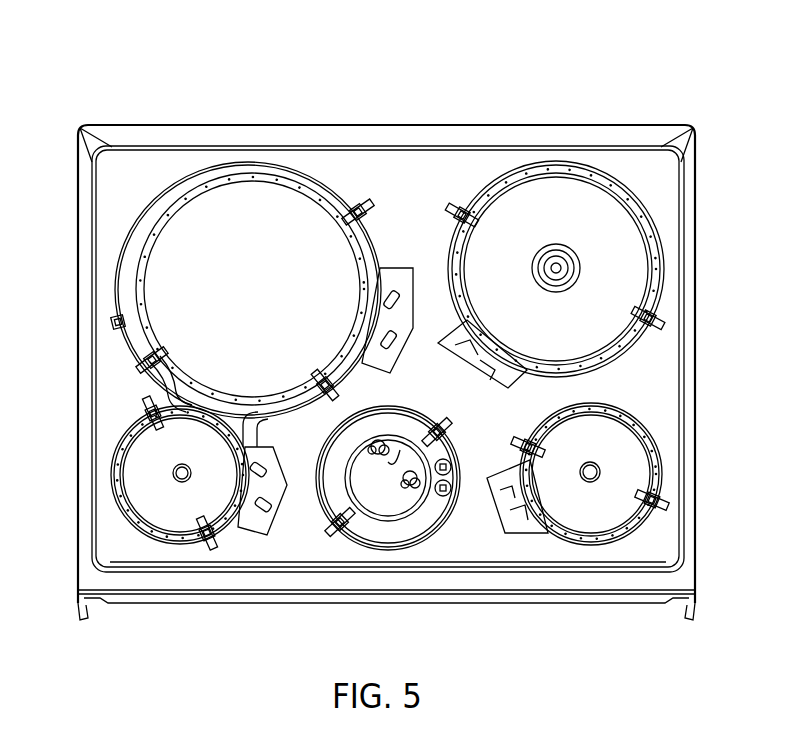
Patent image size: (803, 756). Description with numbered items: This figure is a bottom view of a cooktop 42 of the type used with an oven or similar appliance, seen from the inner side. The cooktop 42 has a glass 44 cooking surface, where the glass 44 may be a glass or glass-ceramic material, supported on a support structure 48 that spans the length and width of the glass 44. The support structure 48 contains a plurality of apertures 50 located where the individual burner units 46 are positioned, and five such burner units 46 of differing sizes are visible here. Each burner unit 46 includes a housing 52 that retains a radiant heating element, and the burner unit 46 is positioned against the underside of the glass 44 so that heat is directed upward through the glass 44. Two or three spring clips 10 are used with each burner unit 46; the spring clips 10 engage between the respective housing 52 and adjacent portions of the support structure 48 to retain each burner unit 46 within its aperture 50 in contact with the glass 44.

The spring clip 10 is at (361, 212).
The cooktop 42 is at (662, 82).
The glass 44 is at (334, 462).
The burner unit 46 is at (260, 212).
The support structure 48 is at (662, 180).
The aperture 50 is at (170, 173).
The housing 52 is at (228, 190).